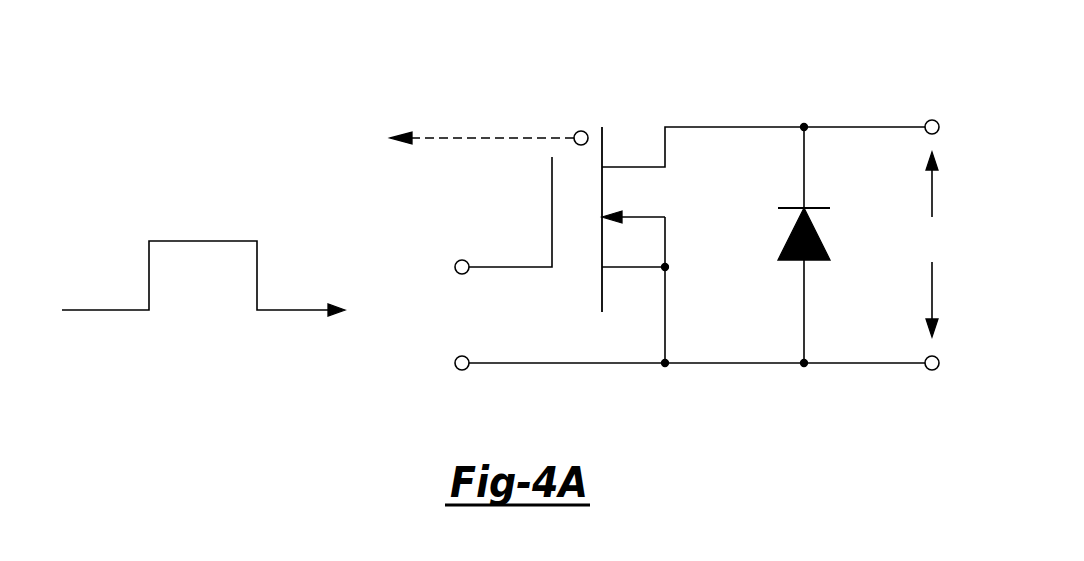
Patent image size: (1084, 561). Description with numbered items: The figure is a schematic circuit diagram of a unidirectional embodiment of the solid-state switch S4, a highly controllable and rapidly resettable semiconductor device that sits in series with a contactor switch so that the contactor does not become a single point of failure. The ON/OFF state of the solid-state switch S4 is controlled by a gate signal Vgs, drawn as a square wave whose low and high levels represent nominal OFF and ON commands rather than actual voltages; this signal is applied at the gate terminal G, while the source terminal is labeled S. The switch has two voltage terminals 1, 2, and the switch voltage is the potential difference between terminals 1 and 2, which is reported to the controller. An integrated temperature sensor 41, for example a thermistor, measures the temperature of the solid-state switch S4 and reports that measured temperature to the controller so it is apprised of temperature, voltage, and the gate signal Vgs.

The integrated temperature sensor 41 is at (580, 131).
The solid-state switch S4 is at (880, 55).
The voltage terminal 1 is at (944, 128).
The voltage terminal 2 is at (944, 364).
The gate terminal G is at (492, 220).
The source terminal S is at (678, 364).
The gate signal Vgs is at (168, 172).